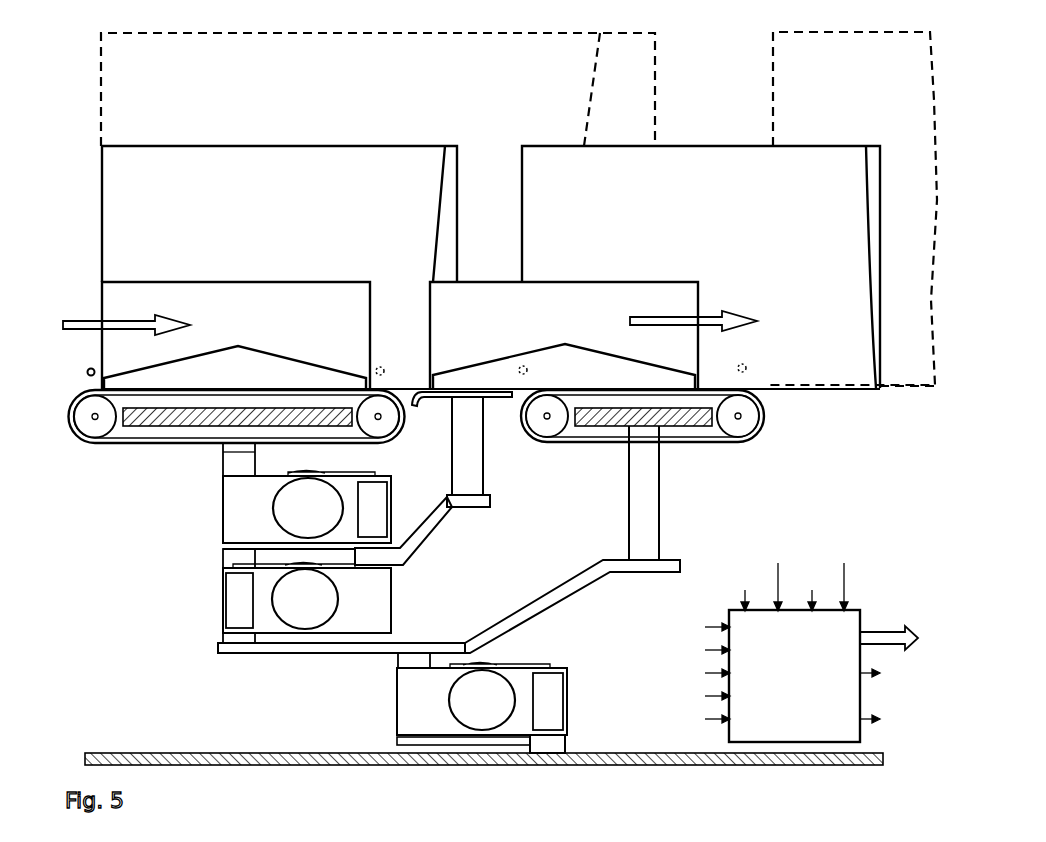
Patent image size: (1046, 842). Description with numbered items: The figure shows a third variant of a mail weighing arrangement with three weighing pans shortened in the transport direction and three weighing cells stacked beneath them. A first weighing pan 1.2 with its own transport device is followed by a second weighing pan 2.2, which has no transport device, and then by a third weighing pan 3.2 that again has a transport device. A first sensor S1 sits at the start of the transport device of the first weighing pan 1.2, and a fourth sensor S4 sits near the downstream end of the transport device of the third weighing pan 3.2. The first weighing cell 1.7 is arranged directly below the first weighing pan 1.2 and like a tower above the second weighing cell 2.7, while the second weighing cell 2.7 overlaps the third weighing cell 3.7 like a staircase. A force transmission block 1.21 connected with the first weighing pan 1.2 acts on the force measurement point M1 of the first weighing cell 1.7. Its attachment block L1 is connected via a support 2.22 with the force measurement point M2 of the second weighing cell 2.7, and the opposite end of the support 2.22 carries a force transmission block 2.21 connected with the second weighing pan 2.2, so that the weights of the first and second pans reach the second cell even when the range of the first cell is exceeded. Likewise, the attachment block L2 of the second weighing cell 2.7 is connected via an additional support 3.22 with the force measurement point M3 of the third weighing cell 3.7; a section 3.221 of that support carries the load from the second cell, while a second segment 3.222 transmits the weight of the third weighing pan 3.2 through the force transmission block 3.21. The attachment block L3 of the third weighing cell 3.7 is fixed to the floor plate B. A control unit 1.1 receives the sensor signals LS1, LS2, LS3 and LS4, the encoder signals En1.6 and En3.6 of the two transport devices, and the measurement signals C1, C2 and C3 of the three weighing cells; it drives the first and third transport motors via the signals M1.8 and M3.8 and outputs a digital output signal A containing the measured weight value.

The first sensor S1 is at (87, 372).
The fourth sensor S4 is at (748, 368).
The first weighing pan 1.2 is at (180, 415).
The force transmission block 1.21 is at (245, 460).
The first weighing cell 1.7 is at (235, 521).
The force measurement point of the first weighing cell M1 is at (240, 493).
The attachment block L1 is at (265, 549).
The second weighing pan 2.2 is at (497, 403).
The force transmission block 2.21 is at (485, 470).
The support 2.22 is at (432, 535).
The second weighing cell 2.7 is at (375, 600).
The force measurement point of the second weighing cell M2 is at (385, 580).
The attachment block L2 is at (228, 643).
The section of the additional support 3.221 is at (275, 650).
The second segment of the additional support 3.222 is at (540, 600).
The third weighing pan 3.2 is at (680, 425).
The force transmission block 3.21 is at (650, 510).
The additional support 3.22 is at (680, 560).
The third weighing cell 3.7 is at (397, 712).
The force measurement point of the third weighing cell M3 is at (410, 690).
The attachment block L3 is at (410, 743).
The floor plate B is at (235, 753).
The control unit 1.1 is at (850, 628).
The measurement signal C1 is at (692, 627).
The encoder signal En1.6 is at (685, 650).
The measurement signal C2 is at (692, 673).
The encoder signal En3.6 is at (685, 696).
The measurement signal C3 is at (692, 719).
The sensor signal LS1 is at (734, 590).
The sensor signal LS2 is at (777, 577).
The sensor signal LS3 is at (812, 590).
The sensor signal LS4 is at (842, 577).
The digital output signal A is at (899, 629).
The motor signal M1.8 is at (899, 674).
The motor signal M3.8 is at (899, 720).